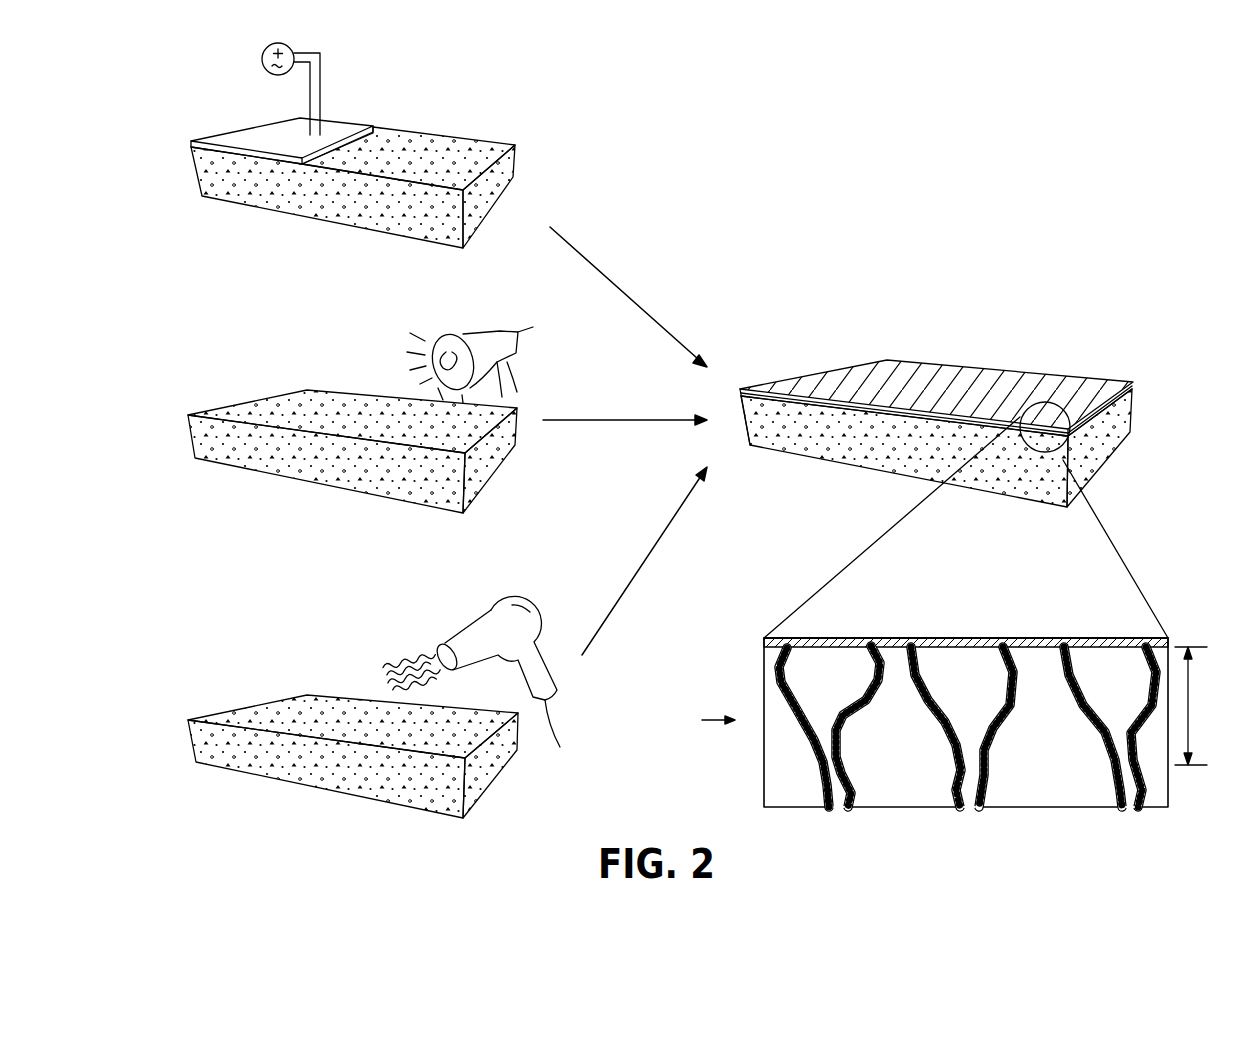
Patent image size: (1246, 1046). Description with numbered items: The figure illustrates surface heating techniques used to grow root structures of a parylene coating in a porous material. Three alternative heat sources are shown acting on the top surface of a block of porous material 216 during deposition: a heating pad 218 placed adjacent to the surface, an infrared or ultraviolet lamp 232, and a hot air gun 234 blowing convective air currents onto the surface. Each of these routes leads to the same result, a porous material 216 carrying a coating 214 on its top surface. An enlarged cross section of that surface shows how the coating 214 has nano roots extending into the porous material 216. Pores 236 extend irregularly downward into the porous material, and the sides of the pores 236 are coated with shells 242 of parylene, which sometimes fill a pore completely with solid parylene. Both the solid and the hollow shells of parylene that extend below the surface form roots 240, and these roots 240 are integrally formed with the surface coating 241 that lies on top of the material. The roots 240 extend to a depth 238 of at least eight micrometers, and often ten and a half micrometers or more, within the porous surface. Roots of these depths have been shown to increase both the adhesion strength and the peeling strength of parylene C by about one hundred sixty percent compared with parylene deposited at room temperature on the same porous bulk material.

The coating 214 is at (1017, 382).
The porous material 216 is at (388, 217).
The heating pad 218 is at (237, 132).
The infrared or ultraviolet lamp 232 is at (492, 345).
The hot air gun 234 is at (508, 593).
The pores 236 is at (841, 676).
The depth 238 is at (1212, 720).
The roots 240 is at (832, 810).
The surface coating 241 is at (1098, 640).
The shells 242 is at (832, 713).